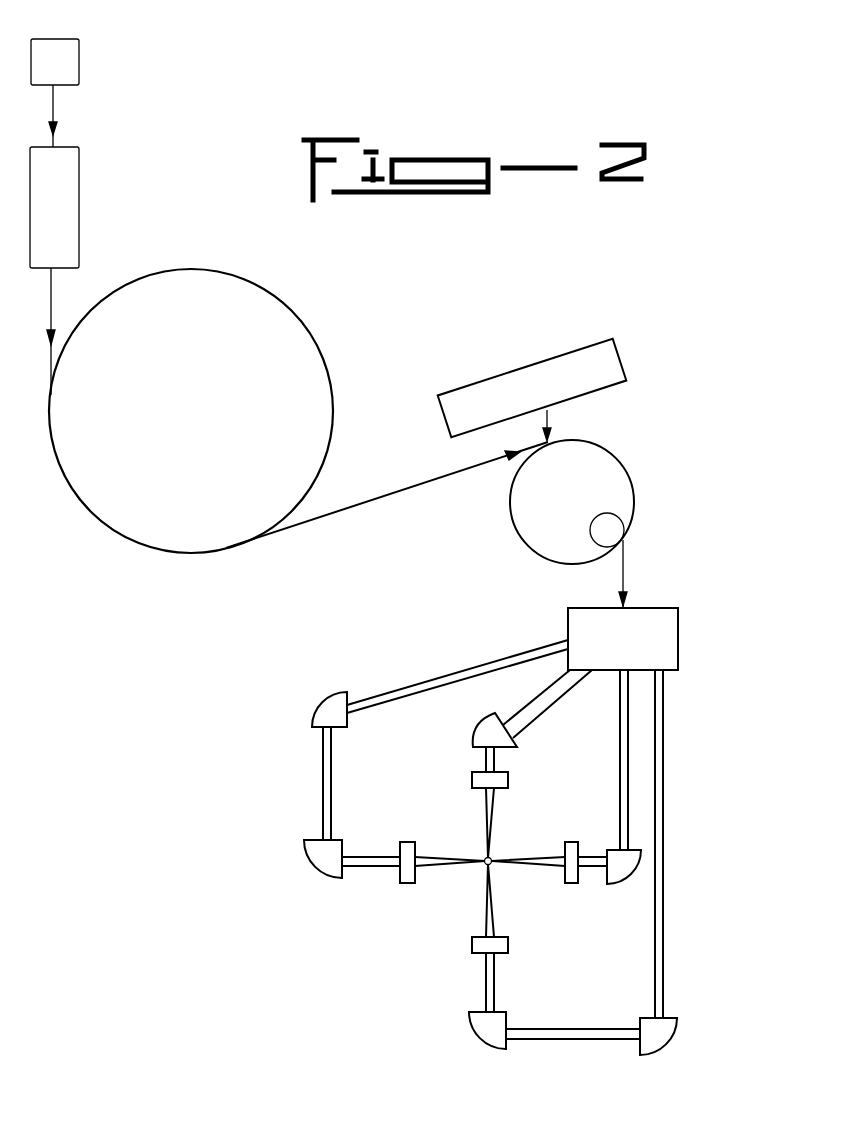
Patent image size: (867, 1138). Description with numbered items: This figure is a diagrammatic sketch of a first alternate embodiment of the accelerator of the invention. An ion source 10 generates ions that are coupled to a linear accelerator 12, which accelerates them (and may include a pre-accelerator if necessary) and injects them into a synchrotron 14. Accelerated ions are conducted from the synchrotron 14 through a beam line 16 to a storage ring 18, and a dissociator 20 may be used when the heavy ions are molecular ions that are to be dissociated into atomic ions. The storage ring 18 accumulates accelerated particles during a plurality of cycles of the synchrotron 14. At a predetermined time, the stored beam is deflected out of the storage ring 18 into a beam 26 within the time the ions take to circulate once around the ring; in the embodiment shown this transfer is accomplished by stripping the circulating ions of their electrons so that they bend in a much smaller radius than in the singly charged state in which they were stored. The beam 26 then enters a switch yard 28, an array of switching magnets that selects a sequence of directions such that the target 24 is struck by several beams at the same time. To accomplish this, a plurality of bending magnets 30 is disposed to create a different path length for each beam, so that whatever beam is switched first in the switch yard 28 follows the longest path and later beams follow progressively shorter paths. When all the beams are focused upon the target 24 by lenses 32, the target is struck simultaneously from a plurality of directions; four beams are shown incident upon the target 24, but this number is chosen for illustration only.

The ion source 10 is at (60, 64).
The linear accelerator 12 is at (50, 185).
The synchrotron 14 is at (266, 300).
The beam line 16 is at (410, 488).
The storage ring 18 is at (622, 462).
The dissociator 20 is at (610, 360).
The target 24 is at (495, 855).
The beam 26 is at (628, 568).
The switch yard 28 is at (665, 665).
The bending magnets 30 is at (327, 710).
The lenses 32 is at (505, 782).